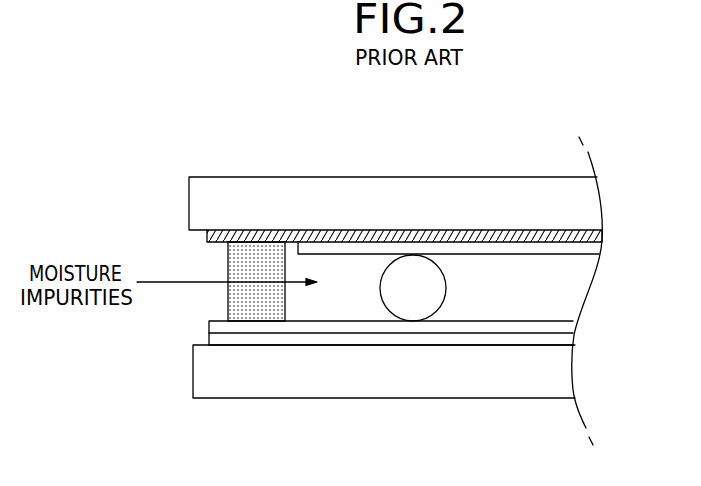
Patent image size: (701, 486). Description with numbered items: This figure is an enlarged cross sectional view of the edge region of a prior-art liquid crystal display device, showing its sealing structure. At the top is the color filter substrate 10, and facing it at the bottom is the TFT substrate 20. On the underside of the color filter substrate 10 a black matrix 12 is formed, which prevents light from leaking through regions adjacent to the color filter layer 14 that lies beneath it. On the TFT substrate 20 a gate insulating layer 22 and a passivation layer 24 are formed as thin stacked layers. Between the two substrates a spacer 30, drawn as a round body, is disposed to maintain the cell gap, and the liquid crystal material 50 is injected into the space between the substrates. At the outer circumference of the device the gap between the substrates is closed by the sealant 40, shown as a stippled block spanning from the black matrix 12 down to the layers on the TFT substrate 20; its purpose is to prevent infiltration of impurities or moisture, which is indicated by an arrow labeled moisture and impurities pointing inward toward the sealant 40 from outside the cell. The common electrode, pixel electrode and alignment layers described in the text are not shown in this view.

The color filter substrate 10 is at (582, 200).
The black matrix 12 is at (600, 233).
The color filter layer 14 is at (597, 247).
The TFT substrate 20 is at (557, 370).
The gate insulating layer 22 is at (573, 342).
The passivation layer 24 is at (573, 323).
The spacer 30 is at (413, 303).
The sealant 40 is at (243, 301).
The liquid crystal material 50 is at (563, 285).